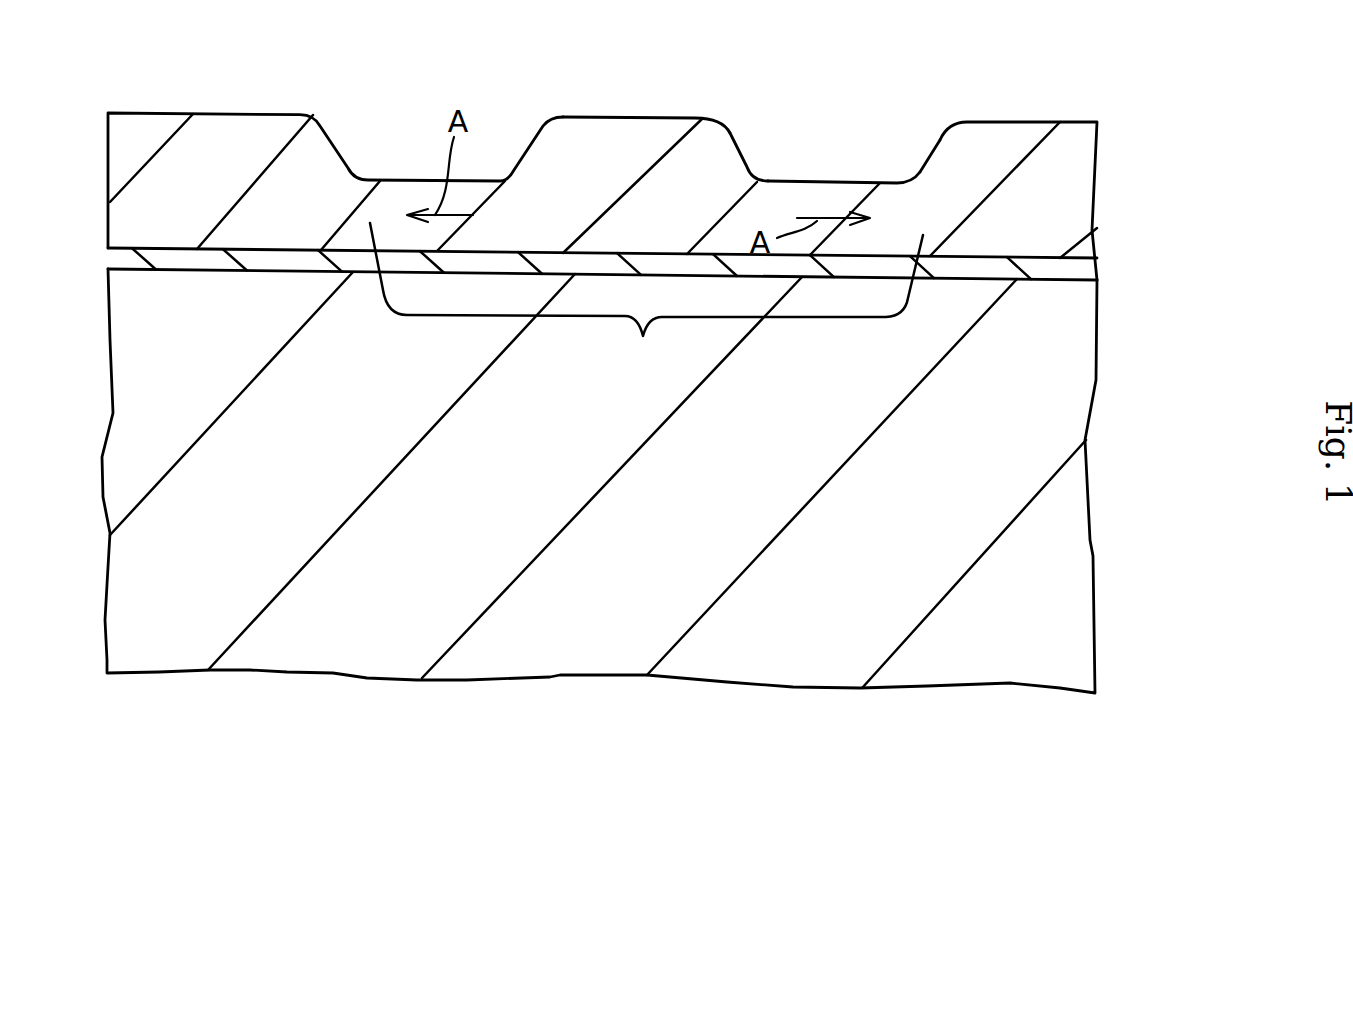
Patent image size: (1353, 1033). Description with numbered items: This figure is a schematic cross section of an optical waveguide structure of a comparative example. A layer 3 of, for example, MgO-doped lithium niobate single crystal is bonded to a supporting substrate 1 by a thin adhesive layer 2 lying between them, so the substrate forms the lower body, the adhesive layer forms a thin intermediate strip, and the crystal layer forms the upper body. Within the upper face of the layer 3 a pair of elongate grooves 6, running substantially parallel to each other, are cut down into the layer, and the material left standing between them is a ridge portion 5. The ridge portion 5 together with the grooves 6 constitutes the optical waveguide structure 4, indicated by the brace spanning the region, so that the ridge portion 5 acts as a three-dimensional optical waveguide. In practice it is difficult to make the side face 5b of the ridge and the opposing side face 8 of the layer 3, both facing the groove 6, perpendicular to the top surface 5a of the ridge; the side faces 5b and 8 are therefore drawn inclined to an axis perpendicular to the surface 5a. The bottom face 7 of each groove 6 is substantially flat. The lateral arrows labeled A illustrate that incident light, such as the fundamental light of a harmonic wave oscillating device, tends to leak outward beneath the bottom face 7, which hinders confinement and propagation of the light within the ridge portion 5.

The supporting substrate 1 is at (1077, 495).
The adhesive layer 2 is at (1087, 268).
The layer 3 is at (1110, 149).
The optical waveguide structure 4 is at (646, 298).
The ridge portion 5 is at (696, 105).
The surface 5a is at (620, 116).
The side face 5b is at (743, 150).
The groove 6 is at (862, 132).
The bottom face 7 is at (825, 180).
The side face 8 is at (931, 162).